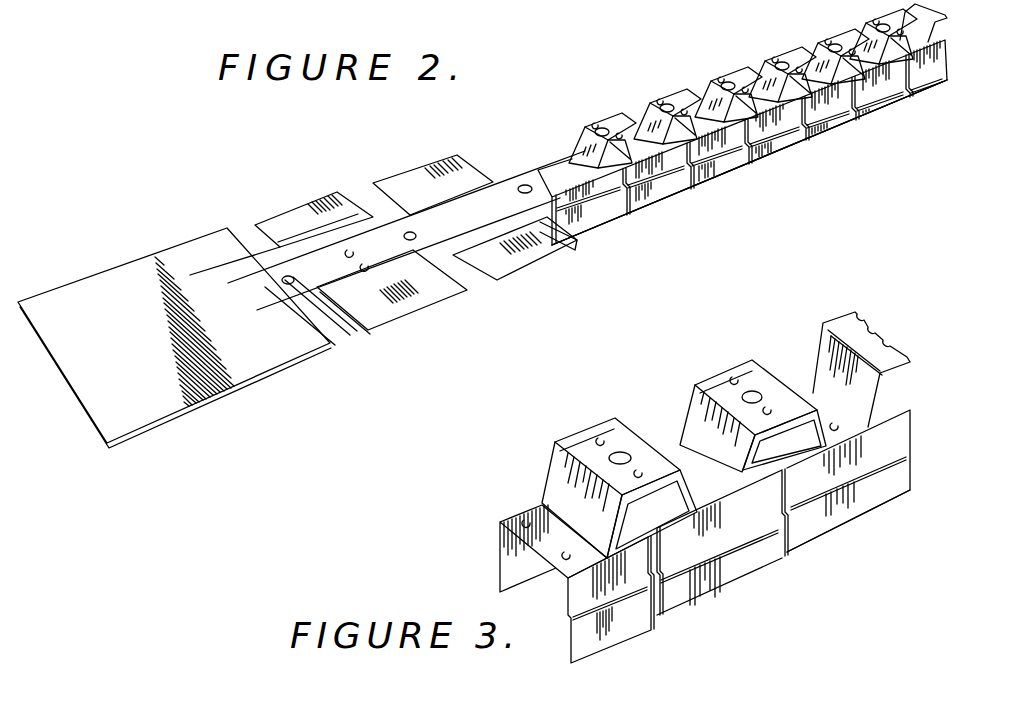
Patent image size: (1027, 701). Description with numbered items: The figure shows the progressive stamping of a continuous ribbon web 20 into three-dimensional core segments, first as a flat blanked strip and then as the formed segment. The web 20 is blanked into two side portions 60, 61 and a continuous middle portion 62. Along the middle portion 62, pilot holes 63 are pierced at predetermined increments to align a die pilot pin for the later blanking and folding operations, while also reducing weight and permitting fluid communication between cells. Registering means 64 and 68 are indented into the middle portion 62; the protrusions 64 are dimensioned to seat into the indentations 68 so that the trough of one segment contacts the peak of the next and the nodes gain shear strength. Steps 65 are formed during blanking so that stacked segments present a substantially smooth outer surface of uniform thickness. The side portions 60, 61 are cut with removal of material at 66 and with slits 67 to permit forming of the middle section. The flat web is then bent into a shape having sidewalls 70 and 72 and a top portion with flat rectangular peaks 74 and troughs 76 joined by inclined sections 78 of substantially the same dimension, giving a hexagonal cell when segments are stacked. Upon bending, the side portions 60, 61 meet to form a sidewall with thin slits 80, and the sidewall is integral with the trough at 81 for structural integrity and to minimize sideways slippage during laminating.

In FIG. 2, the web 20 is at (174, 354).
In FIG. 2, the side portion 60 is at (293, 220).
In FIG. 2, the side portion 61 is at (500, 260).
In FIG. 2, the continuous middle portion 62 is at (262, 292).
In FIG. 2, the pilot holes 63 is at (525, 185).
In FIG. 3, the pilot holes 63 is at (622, 452).
In FIG. 2, the registering means 64 is at (348, 248).
In FIG. 3, the registering means 64 is at (768, 408).
In FIG. 2, the steps 65 is at (703, 160).
In FIG. 3, the steps 65 is at (608, 598).
In FIG. 2, the removal of material 66 is at (277, 300).
In FIG. 2, the slits 67 is at (332, 322).
In FIG. 2, the registering means 68 is at (418, 245).
In FIG. 3, the registering means 68 is at (833, 422).
In FIG. 2, the sidewall 70 is at (633, 203).
In FIG. 3, the sidewall 70 is at (637, 617).
In FIG. 3, the sidewall 72 is at (500, 578).
In FIG. 2, the peak 74 is at (590, 124).
In FIG. 3, the peak 74 is at (720, 387).
In FIG. 2, the trough 76 is at (637, 143).
In FIG. 3, the trough 76 is at (685, 465).
In FIG. 2, the inclined sections 78 is at (762, 80).
In FIG. 3, the inclined sections 78 is at (558, 485).
In FIG. 2, the thin slits 80 is at (760, 158).
In FIG. 3, the thin slits 80 is at (785, 552).
In FIG. 3, the integral sidewall-trough junction 81 is at (718, 508).